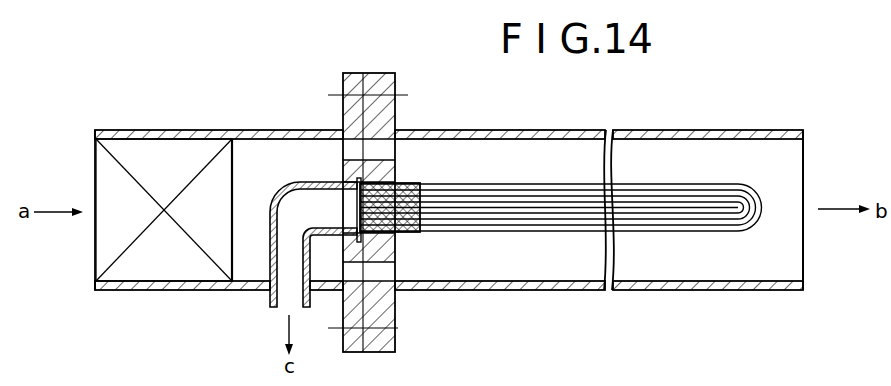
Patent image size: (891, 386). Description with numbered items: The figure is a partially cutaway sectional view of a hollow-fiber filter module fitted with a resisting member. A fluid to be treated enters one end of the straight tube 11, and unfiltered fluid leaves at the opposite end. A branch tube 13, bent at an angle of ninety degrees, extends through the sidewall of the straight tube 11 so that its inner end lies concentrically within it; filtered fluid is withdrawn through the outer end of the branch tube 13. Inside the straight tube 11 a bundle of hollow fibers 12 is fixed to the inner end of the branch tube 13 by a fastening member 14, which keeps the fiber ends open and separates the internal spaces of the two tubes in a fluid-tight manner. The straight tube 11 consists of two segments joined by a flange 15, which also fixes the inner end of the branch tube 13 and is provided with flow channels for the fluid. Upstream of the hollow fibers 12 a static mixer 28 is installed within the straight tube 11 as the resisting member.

The straight tube 11 is at (288, 130).
The bundle of hollow fibers 12 is at (694, 184).
The branch tube 13 is at (303, 182).
The fastening member 14 is at (410, 182).
The flange 15 is at (380, 74).
The static mixer 28 is at (195, 150).